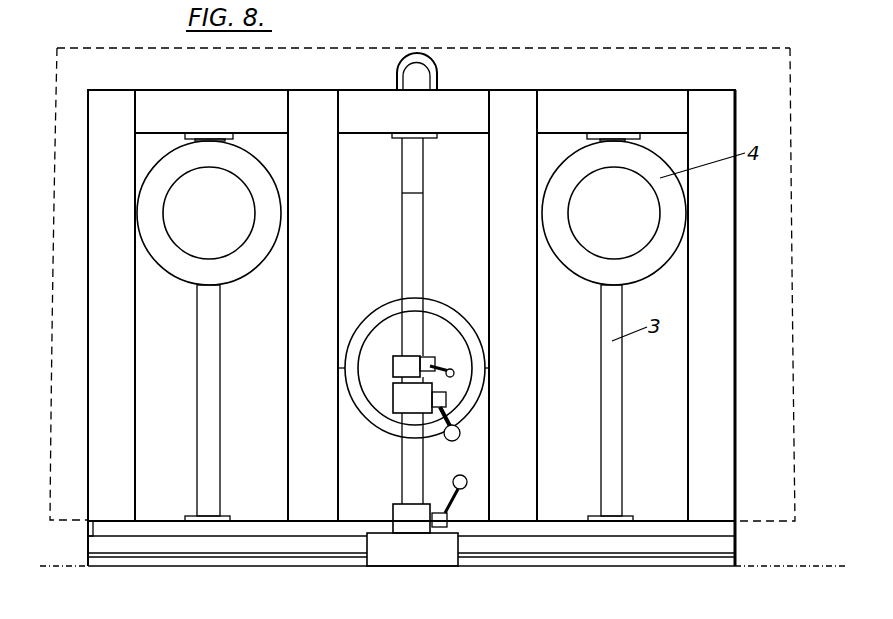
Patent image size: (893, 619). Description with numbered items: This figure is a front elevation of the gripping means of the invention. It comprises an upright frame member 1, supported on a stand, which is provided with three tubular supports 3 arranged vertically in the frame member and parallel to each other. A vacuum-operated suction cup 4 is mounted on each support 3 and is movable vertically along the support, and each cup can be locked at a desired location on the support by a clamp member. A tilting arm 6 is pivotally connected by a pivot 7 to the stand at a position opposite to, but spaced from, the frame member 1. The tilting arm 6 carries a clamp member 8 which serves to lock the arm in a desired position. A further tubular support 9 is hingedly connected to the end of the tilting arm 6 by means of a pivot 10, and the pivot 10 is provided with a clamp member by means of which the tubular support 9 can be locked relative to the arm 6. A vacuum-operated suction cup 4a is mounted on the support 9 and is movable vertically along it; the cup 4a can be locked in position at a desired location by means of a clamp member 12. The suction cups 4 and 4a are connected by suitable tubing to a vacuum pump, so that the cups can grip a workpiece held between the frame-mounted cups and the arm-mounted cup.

The upright frame member 1 is at (717, 327).
The tubular support 3 is at (207, 414).
The vacuum-operated suction cup 4 is at (157, 178).
The vacuum-operated suction cup 4a is at (388, 329).
The tilting arm 6 is at (415, 463).
The pivot 7 is at (418, 517).
The clamp member 8 is at (438, 523).
The tubular support 9 is at (415, 213).
The pivot 10 is at (428, 392).
The clamp member 12 is at (425, 356).